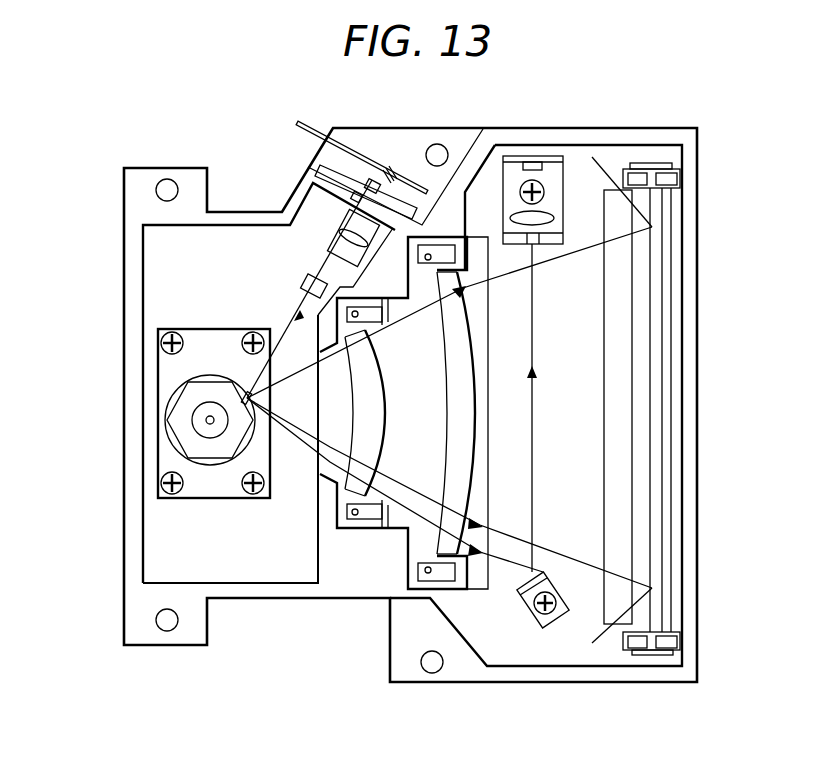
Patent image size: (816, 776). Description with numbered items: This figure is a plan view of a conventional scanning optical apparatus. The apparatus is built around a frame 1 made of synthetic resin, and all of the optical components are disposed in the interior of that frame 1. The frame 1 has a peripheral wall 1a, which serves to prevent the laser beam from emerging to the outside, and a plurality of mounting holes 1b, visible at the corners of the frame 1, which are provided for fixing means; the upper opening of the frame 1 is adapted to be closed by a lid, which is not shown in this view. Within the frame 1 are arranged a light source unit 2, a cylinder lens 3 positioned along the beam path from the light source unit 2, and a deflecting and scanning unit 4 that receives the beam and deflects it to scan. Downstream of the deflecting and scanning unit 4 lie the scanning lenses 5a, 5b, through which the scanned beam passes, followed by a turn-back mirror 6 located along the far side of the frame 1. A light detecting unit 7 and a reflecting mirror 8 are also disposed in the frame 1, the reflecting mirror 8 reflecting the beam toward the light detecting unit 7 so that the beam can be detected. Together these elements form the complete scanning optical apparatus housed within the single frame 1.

The frame 1 is at (124, 242).
The peripheral wall 1a is at (132, 303).
The mounting holes 1b is at (167, 184).
The light source unit 2 is at (375, 161).
The cylinder lens 3 is at (302, 282).
The deflecting and scanning unit 4 is at (210, 503).
The scanning lens 5a is at (384, 437).
The scanning lens 5b is at (448, 392).
The turn-back mirror 6 is at (663, 650).
The light detecting unit 7 is at (553, 155).
The reflecting mirror 8 is at (515, 588).